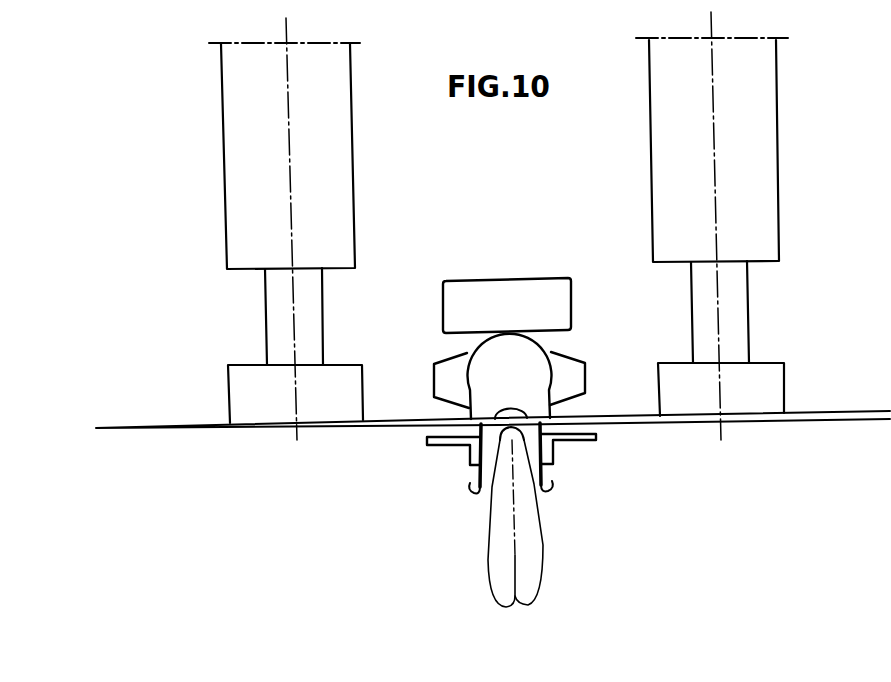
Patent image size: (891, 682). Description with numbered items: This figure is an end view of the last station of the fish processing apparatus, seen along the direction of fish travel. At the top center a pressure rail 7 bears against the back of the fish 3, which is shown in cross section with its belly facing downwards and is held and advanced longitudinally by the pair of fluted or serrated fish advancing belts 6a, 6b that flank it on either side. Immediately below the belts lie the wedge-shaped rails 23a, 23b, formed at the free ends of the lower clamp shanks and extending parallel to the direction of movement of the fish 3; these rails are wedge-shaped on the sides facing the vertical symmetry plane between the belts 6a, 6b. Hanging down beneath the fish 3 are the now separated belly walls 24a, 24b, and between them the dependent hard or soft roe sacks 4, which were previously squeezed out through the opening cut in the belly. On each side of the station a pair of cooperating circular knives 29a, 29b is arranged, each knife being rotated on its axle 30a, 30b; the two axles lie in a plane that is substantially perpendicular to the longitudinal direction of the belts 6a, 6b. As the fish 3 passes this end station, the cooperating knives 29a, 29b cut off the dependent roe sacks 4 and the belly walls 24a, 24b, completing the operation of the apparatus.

The fish 3 is at (519, 392).
The hard and soft roe sacks 4 is at (526, 596).
The fish advancing belt 6a is at (582, 378).
The fish advancing belt 6b is at (436, 378).
The pressure rail 7 is at (517, 290).
The rail 23a is at (596, 437).
The rail 23b is at (427, 441).
The belly wall 24a is at (553, 486).
The belly wall 24b is at (472, 486).
The circular knife 29a is at (837, 418).
The circular knife 29b is at (171, 427).
The axle 30a is at (712, 40).
The axle 30b is at (287, 44).